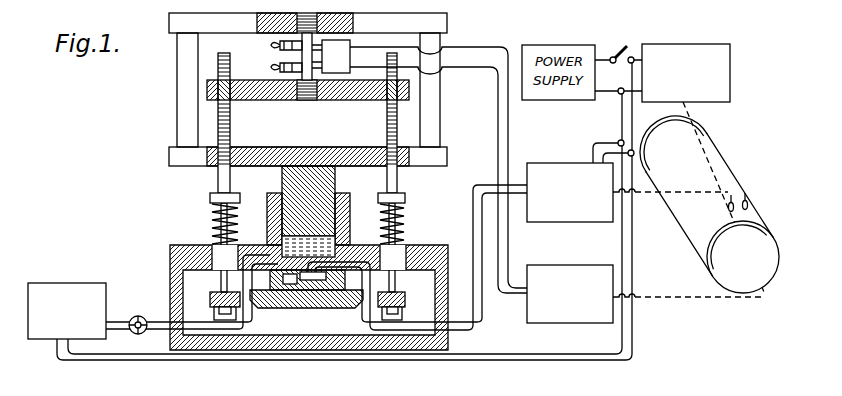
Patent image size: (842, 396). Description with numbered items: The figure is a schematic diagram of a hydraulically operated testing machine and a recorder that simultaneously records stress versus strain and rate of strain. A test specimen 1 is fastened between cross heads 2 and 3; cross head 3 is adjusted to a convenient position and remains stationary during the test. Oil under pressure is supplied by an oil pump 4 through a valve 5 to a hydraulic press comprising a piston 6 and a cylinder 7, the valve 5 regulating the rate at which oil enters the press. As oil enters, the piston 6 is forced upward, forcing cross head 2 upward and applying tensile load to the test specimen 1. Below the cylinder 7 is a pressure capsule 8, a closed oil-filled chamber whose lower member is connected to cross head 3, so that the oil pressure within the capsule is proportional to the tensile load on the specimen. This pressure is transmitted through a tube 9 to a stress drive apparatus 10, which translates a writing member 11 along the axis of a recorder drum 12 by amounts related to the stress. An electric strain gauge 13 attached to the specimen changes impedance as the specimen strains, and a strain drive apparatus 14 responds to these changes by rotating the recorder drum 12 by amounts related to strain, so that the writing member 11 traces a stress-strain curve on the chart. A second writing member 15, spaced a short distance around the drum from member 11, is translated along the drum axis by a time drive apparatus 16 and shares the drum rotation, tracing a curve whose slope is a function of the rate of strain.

The test specimen 1 is at (298, 56).
The cross head 2 is at (440, 22).
The cross head 3 is at (352, 101).
The oil pump 4 is at (63, 283).
The valve 5 is at (138, 315).
The piston 6 is at (338, 183).
The cylinder 7 is at (346, 218).
The pressure capsule 8 is at (310, 308).
The tube 9 is at (473, 330).
The stress drive apparatus 10 is at (570, 163).
The writing member 11 is at (748, 204).
The recorder drum 12 is at (712, 270).
The electric strain gauge 13 is at (338, 55).
The strain drive apparatus 14 is at (572, 323).
The writing member 15 is at (728, 208).
The time drive apparatus 16 is at (720, 72).